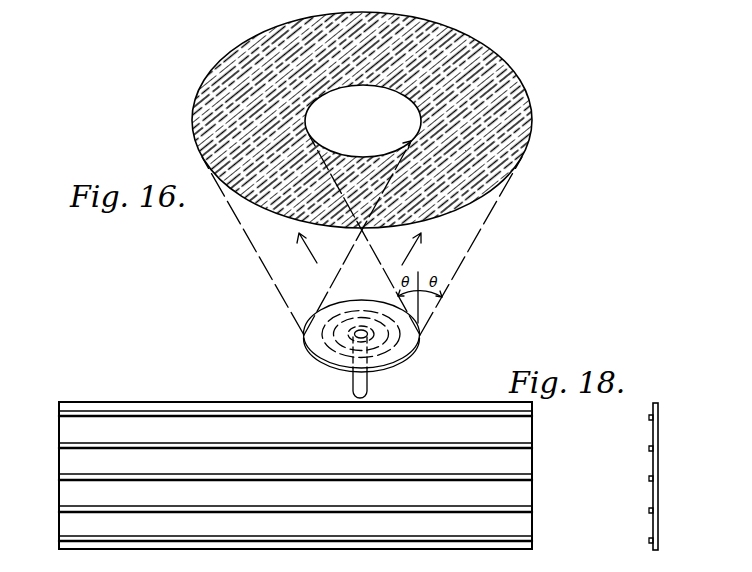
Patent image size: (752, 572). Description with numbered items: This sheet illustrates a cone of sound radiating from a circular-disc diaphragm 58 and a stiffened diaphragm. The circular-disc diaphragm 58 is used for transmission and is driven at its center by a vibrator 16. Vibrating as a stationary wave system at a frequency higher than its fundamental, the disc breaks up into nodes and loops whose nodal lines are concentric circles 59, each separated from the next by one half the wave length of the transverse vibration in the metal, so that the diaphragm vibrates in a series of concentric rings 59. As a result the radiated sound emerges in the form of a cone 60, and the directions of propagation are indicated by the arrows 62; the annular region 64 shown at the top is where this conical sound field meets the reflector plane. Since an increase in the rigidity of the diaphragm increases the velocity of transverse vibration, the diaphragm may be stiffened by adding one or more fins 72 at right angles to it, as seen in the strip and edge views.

In FIG. 16, the vibrator 16 is at (353, 385).
In FIG. 16, the circular-disc diaphragm 58 is at (398, 361).
In FIG. 16, the concentric circles 59 is at (323, 343).
In FIG. 16, the cone 60 is at (491, 220).
In FIG. 16, the arrow 62 is at (307, 255).
In FIG. 16, the annular reflector 64 is at (508, 54).
In FIG. 18, the fins 72 is at (68, 533).